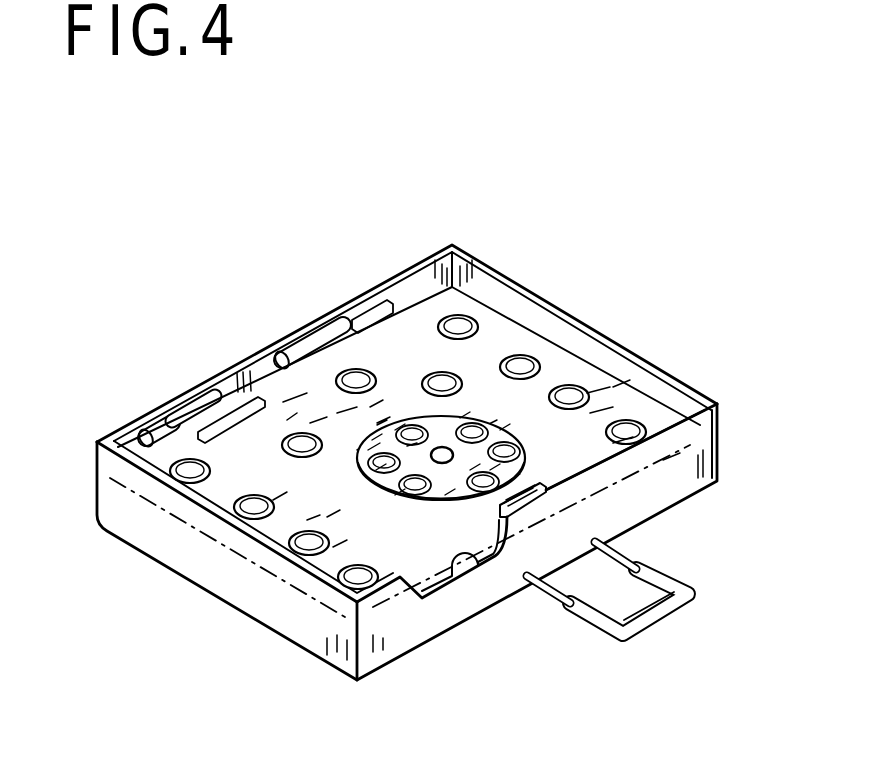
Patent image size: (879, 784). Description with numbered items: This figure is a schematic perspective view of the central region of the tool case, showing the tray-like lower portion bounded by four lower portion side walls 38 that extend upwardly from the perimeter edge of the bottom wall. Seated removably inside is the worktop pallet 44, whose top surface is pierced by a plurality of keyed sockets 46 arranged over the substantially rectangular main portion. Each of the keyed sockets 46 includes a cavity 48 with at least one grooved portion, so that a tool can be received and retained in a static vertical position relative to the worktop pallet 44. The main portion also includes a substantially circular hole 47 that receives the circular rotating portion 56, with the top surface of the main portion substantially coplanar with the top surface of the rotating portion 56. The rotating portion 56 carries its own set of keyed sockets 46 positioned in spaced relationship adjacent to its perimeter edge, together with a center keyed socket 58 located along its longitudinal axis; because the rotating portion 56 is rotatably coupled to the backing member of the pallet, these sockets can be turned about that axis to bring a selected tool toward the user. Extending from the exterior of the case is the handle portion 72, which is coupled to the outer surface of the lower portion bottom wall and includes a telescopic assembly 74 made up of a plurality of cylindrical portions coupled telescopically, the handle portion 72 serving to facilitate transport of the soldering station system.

The lower portion side walls 38 is at (177, 557).
The worktop pallet 44 is at (430, 307).
The keyed sockets 46 is at (465, 318).
The hole 47 is at (521, 358).
The cavity 48 is at (540, 357).
The rotating portion 56 is at (428, 507).
The center keyed socket 58 is at (442, 448).
The handle portion 72 is at (682, 605).
The telescopic assembly 74 is at (633, 552).